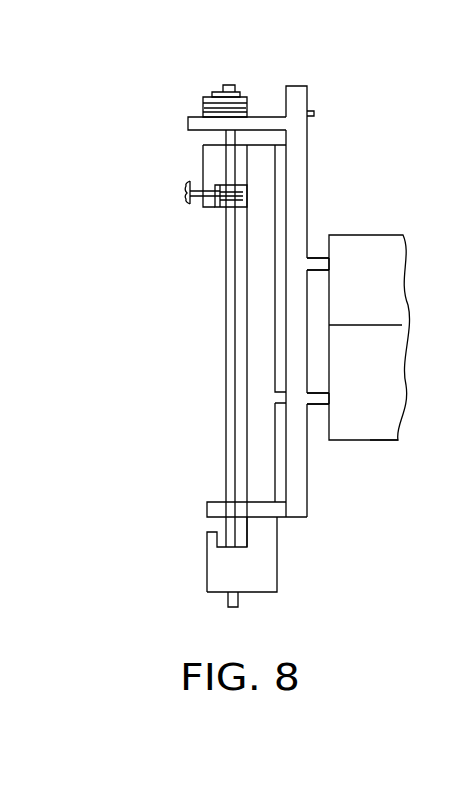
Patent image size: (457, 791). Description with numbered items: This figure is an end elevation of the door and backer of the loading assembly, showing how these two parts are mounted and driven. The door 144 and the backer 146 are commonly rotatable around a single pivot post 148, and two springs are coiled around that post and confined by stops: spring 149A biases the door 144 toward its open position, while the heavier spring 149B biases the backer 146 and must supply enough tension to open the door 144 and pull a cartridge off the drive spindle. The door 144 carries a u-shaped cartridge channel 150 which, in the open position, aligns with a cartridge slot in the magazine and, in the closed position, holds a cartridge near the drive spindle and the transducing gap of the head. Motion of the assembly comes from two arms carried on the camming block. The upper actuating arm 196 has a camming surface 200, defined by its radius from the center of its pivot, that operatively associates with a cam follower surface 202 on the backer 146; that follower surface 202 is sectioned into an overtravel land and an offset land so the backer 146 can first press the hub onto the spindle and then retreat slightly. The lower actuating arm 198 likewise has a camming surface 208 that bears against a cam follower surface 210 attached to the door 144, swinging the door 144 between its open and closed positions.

The door 144 is at (270, 562).
The backer 146 is at (300, 505).
The pivot post 148 is at (229, 85).
The spring 149A is at (200, 104).
The spring 149B is at (232, 207).
The u-shaped cartridge channel 150 is at (198, 208).
The upper actuating arm 196 is at (375, 236).
The lower actuating arm 198 is at (380, 425).
The camming surface 200 is at (328, 250).
The cam follower surface 202 is at (318, 266).
The camming surface 208 is at (325, 385).
The cam follower surface 210 is at (322, 400).